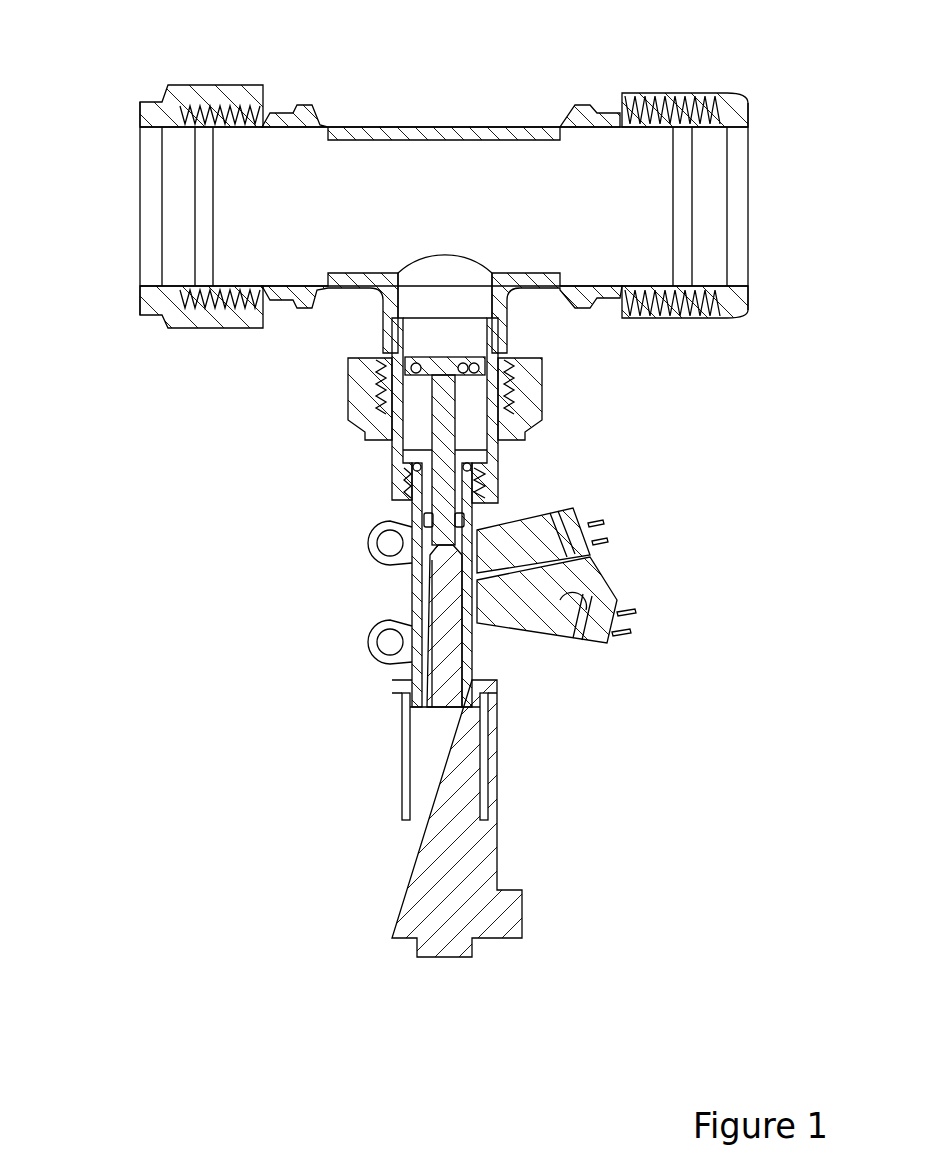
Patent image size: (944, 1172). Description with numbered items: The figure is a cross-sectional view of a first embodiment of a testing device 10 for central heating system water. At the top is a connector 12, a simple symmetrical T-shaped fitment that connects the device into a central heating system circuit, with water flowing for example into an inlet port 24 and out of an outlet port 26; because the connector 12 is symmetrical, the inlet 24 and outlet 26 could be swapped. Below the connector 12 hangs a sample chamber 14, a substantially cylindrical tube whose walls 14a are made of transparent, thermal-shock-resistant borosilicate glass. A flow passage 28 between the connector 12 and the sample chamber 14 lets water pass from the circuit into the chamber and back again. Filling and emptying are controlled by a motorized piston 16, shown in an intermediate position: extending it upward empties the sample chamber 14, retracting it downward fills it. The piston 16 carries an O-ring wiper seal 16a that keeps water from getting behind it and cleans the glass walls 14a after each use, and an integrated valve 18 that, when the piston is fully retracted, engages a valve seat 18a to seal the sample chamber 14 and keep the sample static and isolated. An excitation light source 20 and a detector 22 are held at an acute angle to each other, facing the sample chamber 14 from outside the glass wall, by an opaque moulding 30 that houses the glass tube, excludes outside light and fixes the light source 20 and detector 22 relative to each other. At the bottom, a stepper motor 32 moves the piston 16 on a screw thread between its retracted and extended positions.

The testing device 10 is at (235, 747).
The connector 12 is at (513, 165).
The sample chamber 14 is at (460, 488).
The walls 14a is at (416, 589).
The motorized piston 16 is at (442, 440).
The O-ring wiper seal 16a is at (423, 518).
The integrated valve 18 is at (453, 367).
The valve seat 18a is at (417, 455).
The excitation light source 20 is at (606, 607).
The detector 22 is at (575, 540).
The inlet port 24 is at (180, 170).
The outlet port 26 is at (715, 182).
The flow passage 28 is at (417, 393).
The opaque moulding 30 is at (474, 652).
The stepper motor 32 is at (451, 817).